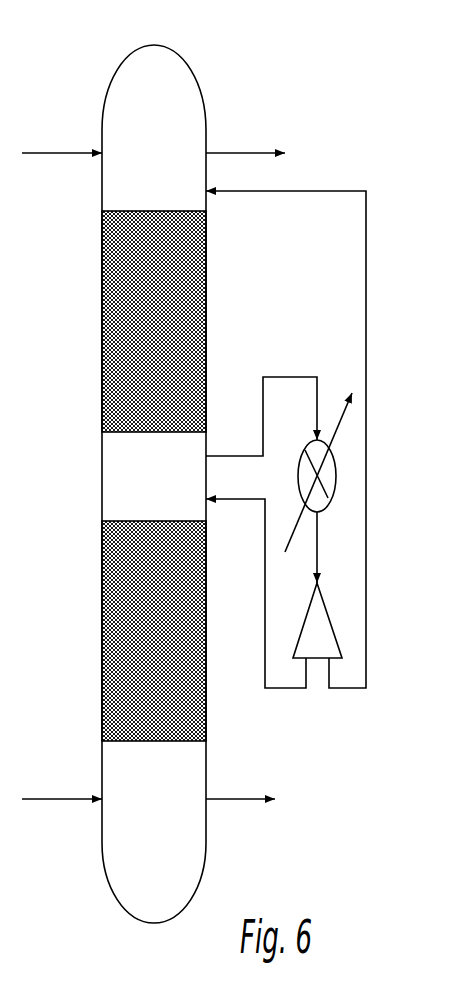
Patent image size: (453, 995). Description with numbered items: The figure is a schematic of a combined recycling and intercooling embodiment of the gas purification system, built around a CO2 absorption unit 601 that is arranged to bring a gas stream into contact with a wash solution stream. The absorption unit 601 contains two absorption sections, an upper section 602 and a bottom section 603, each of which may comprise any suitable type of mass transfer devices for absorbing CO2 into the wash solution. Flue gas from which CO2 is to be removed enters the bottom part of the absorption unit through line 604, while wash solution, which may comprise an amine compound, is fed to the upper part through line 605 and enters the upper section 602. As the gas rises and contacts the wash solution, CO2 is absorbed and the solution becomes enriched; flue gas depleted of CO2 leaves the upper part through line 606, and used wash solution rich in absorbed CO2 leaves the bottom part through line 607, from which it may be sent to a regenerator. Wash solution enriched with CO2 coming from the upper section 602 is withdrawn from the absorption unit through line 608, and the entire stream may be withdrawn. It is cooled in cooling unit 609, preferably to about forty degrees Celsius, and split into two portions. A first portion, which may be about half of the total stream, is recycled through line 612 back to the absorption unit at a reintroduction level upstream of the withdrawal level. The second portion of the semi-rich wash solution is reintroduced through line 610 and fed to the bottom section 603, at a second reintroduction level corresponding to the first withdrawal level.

The CO2 absorption unit 601 is at (193, 80).
The upper section 602 is at (110, 325).
The bottom section 603 is at (120, 616).
The line 604 is at (57, 803).
The line 605 is at (56, 148).
The line 606 is at (252, 148).
The line 607 is at (243, 805).
The line 608 is at (246, 450).
The cooling unit 609 is at (322, 512).
The line 610 is at (252, 503).
The line 612 is at (320, 188).